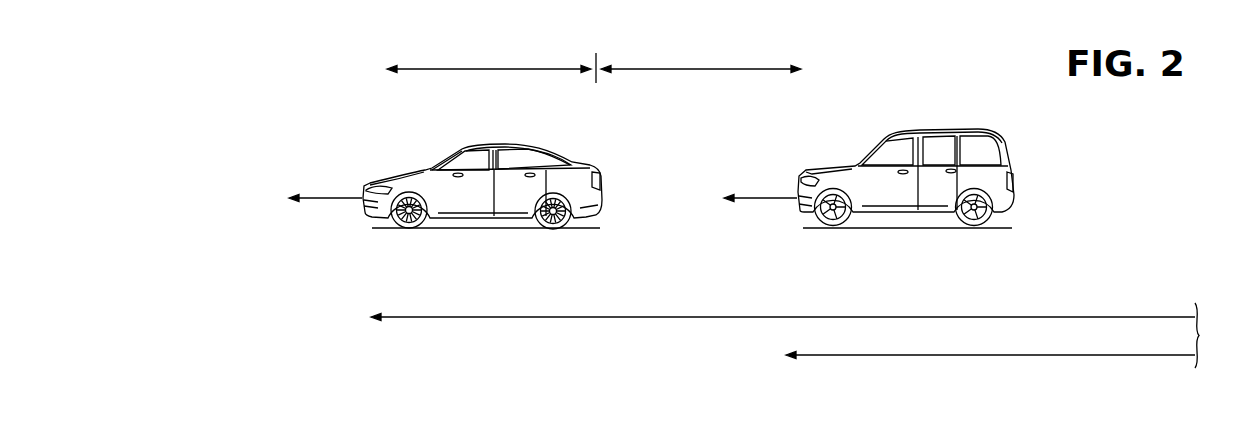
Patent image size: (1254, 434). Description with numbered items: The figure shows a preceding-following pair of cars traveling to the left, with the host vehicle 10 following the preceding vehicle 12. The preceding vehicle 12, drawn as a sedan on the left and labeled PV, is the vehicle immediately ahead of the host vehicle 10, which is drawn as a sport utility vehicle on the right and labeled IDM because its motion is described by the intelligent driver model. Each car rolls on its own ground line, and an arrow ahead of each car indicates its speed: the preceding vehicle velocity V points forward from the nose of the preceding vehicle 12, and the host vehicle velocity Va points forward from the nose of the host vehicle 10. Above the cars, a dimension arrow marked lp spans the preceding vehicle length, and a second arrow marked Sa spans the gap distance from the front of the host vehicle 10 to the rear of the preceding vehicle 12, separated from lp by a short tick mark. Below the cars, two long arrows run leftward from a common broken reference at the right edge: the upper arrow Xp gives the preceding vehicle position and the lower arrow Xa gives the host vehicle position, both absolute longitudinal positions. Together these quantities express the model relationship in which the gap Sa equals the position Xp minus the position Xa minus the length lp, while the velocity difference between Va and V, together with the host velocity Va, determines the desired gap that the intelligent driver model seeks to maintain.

The host vehicle 10 is at (1003, 148).
The preceding vehicle 12 is at (570, 168).
The preceding vehicle PV is at (492, 211).
The intelligent driver model IDM is at (930, 202).
The preceding vehicle velocity V is at (313, 196).
The host vehicle velocity Va is at (751, 180).
The preceding vehicle length lp is at (489, 51).
The gap distance Sa is at (701, 56).
The preceding vehicle position Xp is at (765, 312).
The host vehicle position Xa is at (967, 358).